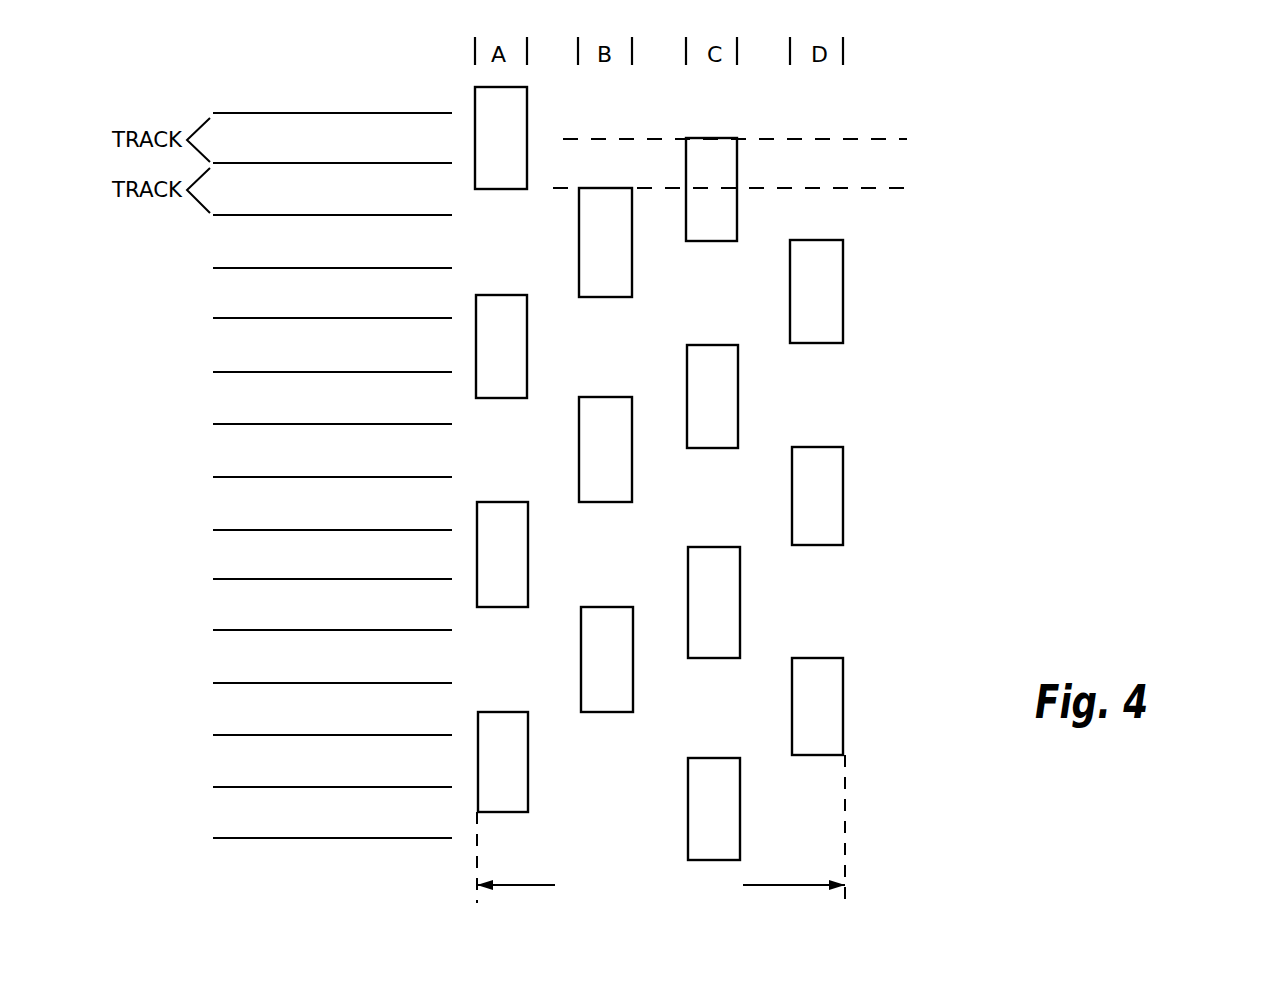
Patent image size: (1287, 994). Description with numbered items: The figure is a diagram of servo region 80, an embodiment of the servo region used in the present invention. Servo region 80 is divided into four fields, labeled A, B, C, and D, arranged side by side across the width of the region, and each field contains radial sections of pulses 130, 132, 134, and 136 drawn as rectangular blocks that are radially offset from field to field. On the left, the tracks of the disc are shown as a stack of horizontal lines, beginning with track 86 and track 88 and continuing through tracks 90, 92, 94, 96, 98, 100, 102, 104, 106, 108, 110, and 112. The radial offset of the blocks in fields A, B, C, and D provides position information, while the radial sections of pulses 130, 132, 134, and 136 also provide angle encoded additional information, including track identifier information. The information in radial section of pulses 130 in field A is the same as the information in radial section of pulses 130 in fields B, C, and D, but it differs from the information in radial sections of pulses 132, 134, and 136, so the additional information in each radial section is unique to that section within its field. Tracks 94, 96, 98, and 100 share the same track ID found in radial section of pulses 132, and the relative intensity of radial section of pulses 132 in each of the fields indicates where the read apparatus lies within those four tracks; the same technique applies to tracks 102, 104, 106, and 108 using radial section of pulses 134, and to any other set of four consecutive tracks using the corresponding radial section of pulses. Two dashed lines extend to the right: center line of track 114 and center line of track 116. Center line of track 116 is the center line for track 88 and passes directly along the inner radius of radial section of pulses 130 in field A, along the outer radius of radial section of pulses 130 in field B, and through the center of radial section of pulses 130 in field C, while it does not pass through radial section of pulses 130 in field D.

The servo region 80 is at (785, 885).
The track 86 is at (332, 138).
The track 88 is at (332, 198).
The track 90 is at (332, 251).
The track 92 is at (332, 301).
The track 94 is at (332, 354).
The track 96 is at (332, 407).
The track 98 is at (332, 460).
The track 100 is at (327, 512).
The track 102 is at (327, 562).
The track 104 is at (327, 613).
The track 106 is at (327, 665).
The track 108 is at (327, 717).
The track 110 is at (327, 769).
The track 112 is at (327, 821).
The center line of track 114 is at (896, 134).
The center line of track 116 is at (894, 182).
The radial section of pulses 130 is at (686, 162).
The radial section of pulses 132 is at (687, 393).
The radial section of pulses 134 is at (688, 580).
The radial section of pulses 136 is at (688, 794).